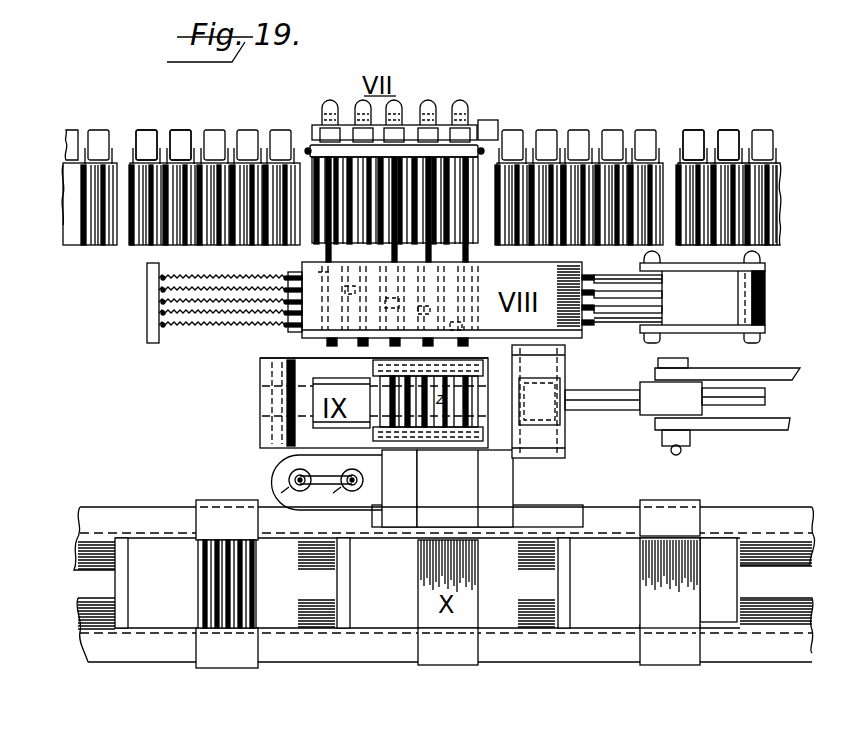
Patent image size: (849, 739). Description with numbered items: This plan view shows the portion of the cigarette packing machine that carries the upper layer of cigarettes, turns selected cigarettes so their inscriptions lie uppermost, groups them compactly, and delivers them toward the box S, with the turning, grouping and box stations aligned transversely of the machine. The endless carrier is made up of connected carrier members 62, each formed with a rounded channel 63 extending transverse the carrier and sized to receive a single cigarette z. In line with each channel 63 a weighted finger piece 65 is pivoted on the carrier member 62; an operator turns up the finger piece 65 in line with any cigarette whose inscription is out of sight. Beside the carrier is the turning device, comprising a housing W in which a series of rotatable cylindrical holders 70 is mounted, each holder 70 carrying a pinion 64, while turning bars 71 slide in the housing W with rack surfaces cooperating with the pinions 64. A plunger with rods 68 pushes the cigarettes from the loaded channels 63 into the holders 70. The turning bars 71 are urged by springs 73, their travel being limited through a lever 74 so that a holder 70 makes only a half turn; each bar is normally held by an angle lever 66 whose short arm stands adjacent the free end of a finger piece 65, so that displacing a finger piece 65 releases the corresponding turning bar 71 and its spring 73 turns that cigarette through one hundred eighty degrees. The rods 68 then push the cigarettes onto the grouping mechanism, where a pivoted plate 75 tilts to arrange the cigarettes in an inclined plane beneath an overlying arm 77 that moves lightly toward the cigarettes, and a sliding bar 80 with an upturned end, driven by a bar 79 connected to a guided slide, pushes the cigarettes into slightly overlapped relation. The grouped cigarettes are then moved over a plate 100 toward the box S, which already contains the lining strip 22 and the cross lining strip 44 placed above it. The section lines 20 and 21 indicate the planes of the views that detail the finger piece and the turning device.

The section line 20- 20 is at (448, 722).
The section line 21- 21 is at (106, 316).
The lining strip 22 is at (444, 584).
The cross lining strip 44 is at (448, 584).
The carrier member 62 is at (232, 241).
The cigarette-receiving channel 63 is at (737, 208).
The pinion 64 is at (450, 305).
The finger piece 65 is at (145, 130).
The angle lever 66 is at (352, 88).
The plunger rods 68 is at (447, 212).
The cylindrical holder 70 is at (361, 212).
The turning bar 71 is at (597, 290).
The spring 73 is at (195, 330).
The lever 74 is at (762, 333).
The plate 75 is at (262, 358).
The overlying arm 77 is at (300, 405).
The bar 79 is at (785, 375).
The sliding bar 80 is at (398, 400).
The plate 100 is at (500, 488).
The box S is at (477, 617).
The housing W is at (560, 296).
The cigarette z is at (142, 243).